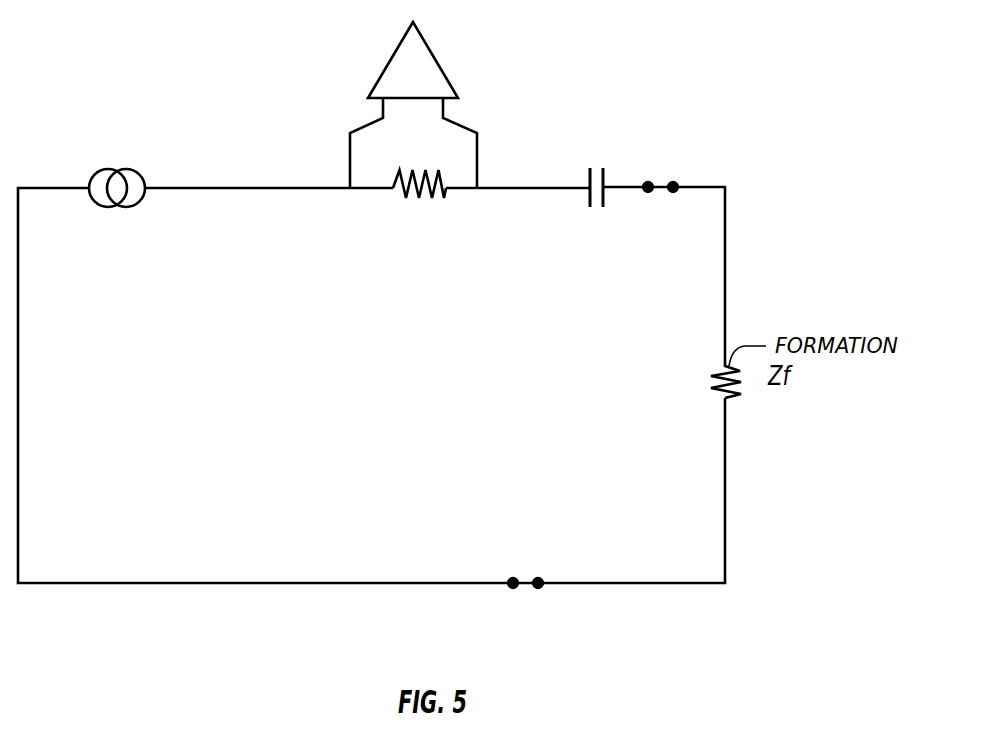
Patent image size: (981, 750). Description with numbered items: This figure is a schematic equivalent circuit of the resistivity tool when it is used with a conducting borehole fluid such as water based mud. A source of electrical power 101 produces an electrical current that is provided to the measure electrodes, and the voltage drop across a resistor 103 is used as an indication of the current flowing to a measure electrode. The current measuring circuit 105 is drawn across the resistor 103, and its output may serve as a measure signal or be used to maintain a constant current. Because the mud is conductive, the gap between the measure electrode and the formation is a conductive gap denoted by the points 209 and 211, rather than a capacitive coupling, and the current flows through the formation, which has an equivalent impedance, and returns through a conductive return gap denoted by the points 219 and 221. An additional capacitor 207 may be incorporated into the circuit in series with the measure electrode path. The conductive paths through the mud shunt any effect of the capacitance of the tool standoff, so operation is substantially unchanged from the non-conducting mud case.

The source of electrical power 101 is at (123, 170).
The resistor 103 is at (415, 197).
The current measuring circuit 105 is at (437, 57).
The additional capacitor 207 is at (582, 201).
The point of conductive gap 209 is at (648, 182).
The point of conductive gap 211 is at (673, 182).
The point of return gap 219 is at (513, 588).
The point of return gap 221 is at (538, 588).